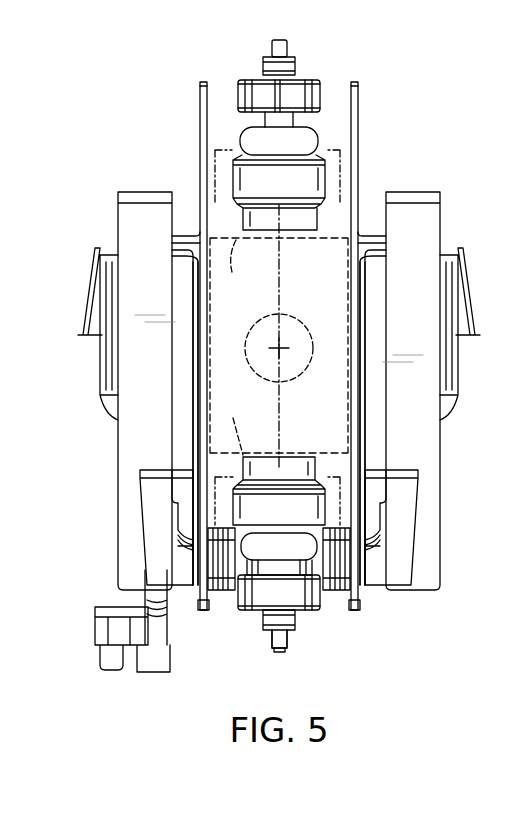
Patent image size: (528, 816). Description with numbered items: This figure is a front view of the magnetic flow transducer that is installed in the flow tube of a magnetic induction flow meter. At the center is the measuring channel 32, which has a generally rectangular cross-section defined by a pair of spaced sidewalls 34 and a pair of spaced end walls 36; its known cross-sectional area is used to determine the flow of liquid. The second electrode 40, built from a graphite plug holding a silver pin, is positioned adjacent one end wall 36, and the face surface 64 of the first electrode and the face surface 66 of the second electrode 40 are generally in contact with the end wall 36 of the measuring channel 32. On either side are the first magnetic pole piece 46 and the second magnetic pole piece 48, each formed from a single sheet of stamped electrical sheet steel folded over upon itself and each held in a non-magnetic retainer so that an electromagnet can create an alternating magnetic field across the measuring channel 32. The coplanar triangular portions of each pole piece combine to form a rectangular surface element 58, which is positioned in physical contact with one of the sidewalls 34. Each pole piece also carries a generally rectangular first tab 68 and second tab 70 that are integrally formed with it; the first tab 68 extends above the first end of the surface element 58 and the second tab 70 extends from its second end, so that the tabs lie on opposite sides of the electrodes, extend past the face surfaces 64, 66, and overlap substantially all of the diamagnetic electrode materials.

The measuring channel 32 is at (343, 240).
The sidewalls 34 is at (207, 300).
The end walls 36 is at (237, 347).
The second electrode 40 is at (262, 645).
The first magnetic pole piece 46 is at (440, 227).
The second magnetic pole piece 48 is at (118, 227).
The rectangular surface element 58 is at (207, 350).
The face surface 64 is at (297, 231).
The face surface 66 is at (296, 457).
The first tab 68 is at (200, 125).
The second tab 70 is at (215, 548).